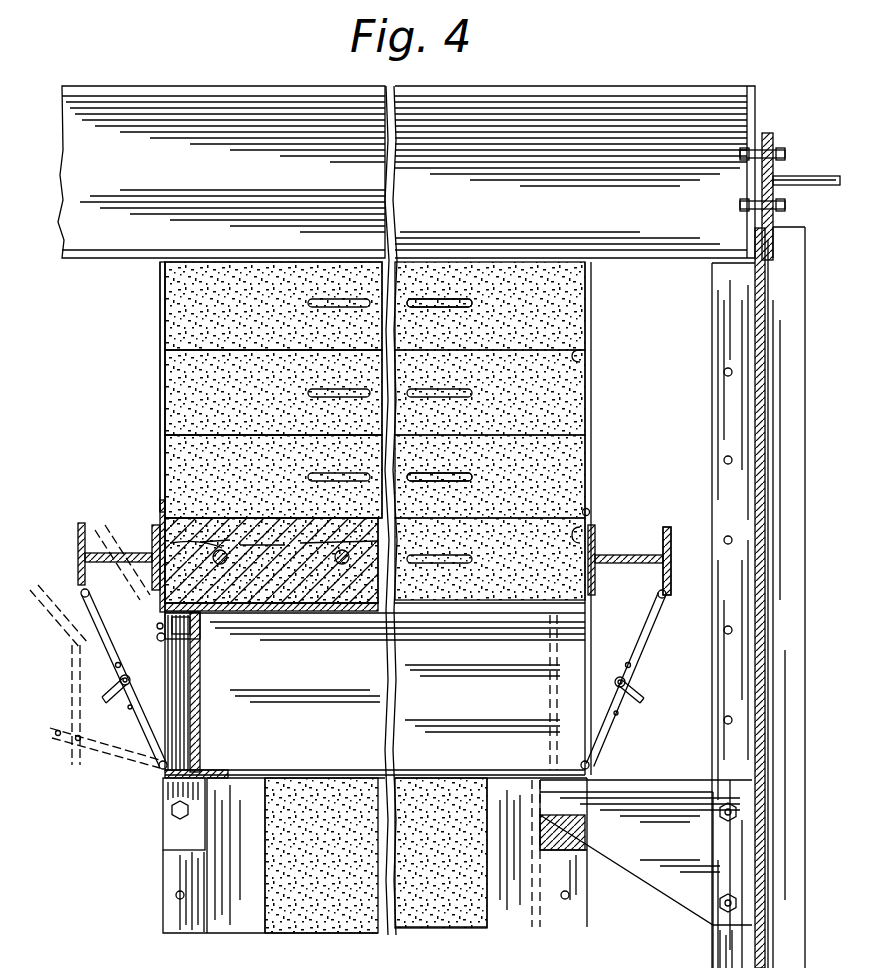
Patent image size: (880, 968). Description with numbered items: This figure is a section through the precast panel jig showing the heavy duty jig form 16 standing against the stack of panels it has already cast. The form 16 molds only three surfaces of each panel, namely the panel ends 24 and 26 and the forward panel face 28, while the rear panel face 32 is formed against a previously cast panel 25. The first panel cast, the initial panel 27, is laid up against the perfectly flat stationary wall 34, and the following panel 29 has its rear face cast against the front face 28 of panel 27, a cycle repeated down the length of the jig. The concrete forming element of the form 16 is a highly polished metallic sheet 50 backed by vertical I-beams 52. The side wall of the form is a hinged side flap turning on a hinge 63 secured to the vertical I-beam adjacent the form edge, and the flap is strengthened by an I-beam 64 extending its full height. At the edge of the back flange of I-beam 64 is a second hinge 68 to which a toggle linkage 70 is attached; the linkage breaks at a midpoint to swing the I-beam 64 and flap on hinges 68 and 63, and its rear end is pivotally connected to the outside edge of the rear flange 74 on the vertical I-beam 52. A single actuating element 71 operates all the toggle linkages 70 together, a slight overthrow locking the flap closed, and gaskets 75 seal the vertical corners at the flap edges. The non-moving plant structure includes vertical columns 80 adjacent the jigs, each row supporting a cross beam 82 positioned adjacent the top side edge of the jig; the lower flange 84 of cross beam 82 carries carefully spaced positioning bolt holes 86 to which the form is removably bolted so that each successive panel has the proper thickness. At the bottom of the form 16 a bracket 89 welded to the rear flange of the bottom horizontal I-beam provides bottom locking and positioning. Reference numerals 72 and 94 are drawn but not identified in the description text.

The jig form 16 is at (338, 712).
The panel end 24 is at (592, 398).
The previously cast panel 25 is at (168, 466).
The panel end 26 is at (162, 406).
The initial panel 27 is at (165, 303).
The forward panel face 28 is at (582, 357).
The panel 29 is at (168, 376).
The rear panel face 32 is at (545, 350).
The flat stationary wall 34 is at (298, 173).
The polished metallic sheet 50 is at (512, 262).
The vertical I-beam 52 is at (202, 686).
The hinge 63 is at (168, 655).
The I-beam 64 is at (685, 512).
The second hinge 68 is at (82, 590).
The toggle linkage 70 is at (143, 735).
The actuating element 71 is at (104, 700).
The lower pivot 72 is at (158, 770).
The rear flange 74 is at (205, 772).
The gasket 75 is at (592, 510).
The vertical column 80 is at (822, 176).
The cross beam 82 is at (790, 360).
The lower flange 84 is at (628, 860).
The positioning bolt holes 86 is at (732, 459).
The bracket 89 is at (165, 826).
The mounting plate 94 is at (758, 192).